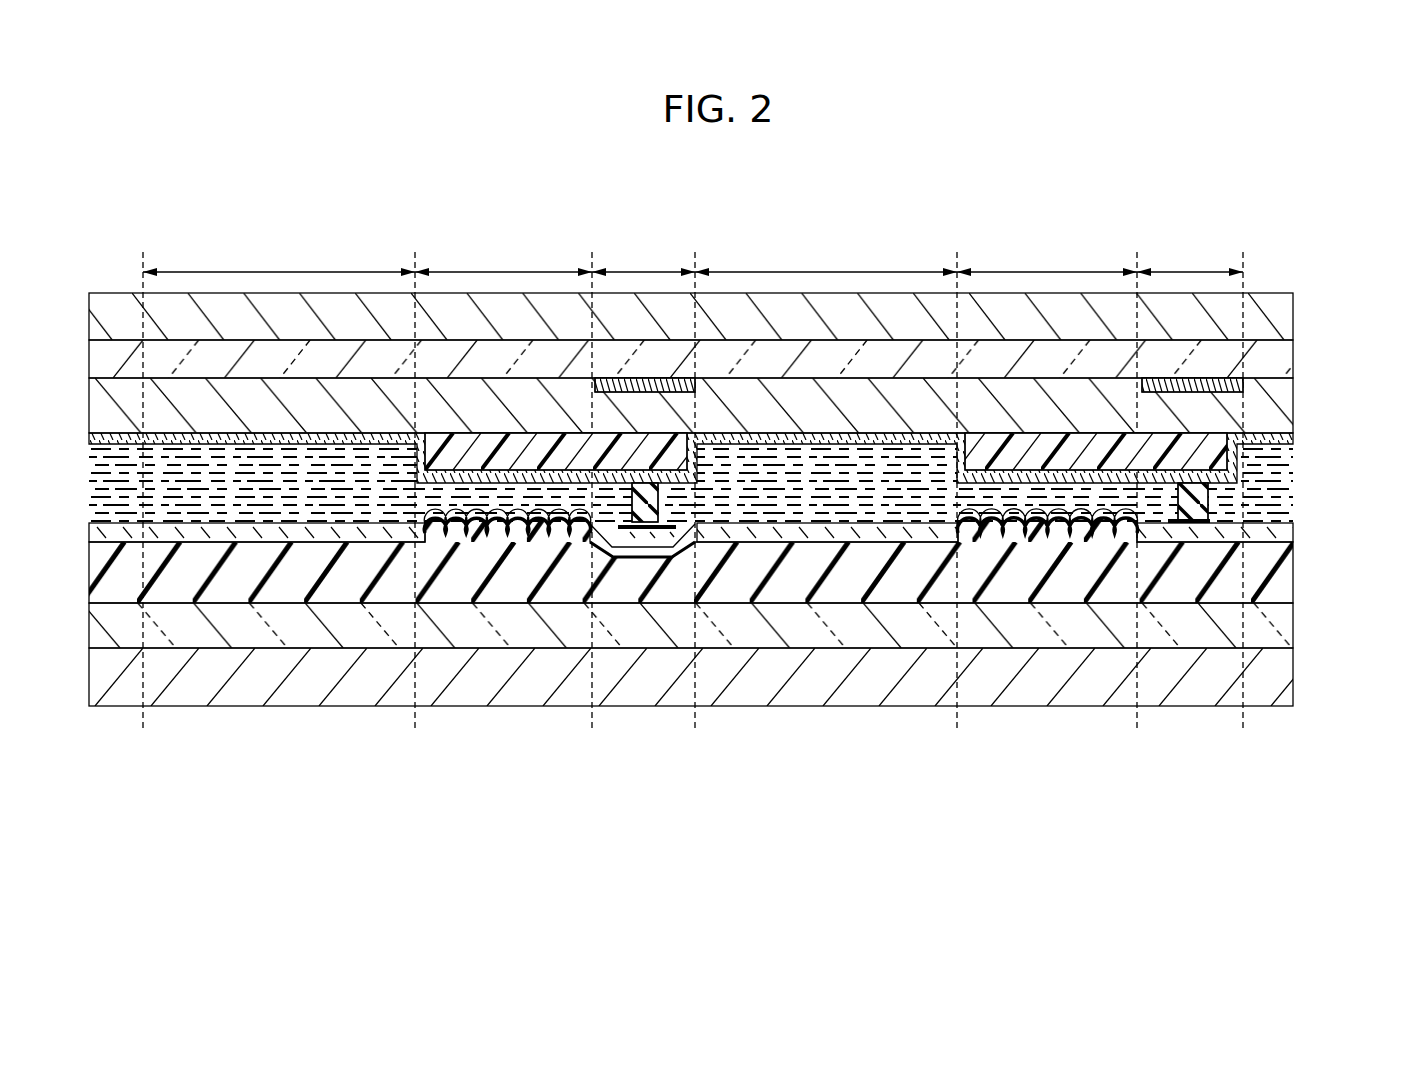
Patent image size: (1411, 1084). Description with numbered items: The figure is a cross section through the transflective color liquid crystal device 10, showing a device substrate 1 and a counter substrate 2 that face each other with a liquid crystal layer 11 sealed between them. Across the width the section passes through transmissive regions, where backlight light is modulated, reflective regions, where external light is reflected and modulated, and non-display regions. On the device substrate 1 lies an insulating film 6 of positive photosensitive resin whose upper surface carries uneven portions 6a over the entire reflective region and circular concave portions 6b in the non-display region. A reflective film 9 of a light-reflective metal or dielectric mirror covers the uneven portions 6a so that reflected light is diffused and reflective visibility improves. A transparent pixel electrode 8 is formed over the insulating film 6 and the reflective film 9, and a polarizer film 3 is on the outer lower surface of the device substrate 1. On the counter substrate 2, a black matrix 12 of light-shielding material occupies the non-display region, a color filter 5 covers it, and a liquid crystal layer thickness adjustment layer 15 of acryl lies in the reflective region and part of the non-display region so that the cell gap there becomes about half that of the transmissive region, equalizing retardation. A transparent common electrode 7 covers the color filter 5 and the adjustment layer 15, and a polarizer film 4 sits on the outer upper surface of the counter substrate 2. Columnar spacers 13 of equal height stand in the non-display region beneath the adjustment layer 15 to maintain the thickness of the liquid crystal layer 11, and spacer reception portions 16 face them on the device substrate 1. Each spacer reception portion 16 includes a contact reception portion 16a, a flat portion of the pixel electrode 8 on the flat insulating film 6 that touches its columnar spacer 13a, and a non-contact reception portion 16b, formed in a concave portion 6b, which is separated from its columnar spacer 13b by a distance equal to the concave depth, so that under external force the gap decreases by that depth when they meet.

The device substrate 1 is at (1290, 612).
The counter substrate 2 is at (1290, 356).
The polarizer film 3 is at (1290, 665).
The polarizer film 4 is at (1290, 306).
The color filter 5 is at (1290, 400).
The insulating film 6 is at (716, 630).
The uneven portions 6a is at (1050, 505).
The concave portions 6b is at (620, 552).
The common electrode 7 is at (1290, 439).
The pixel electrode 8 is at (1290, 532).
The reflective film 9 is at (427, 538).
The liquid crystal device 10 is at (1035, 178).
The liquid crystal layer 11 is at (1290, 456).
The black matrix 12 is at (682, 378).
The columnar spacers 13 is at (1000, 641).
The columnar spacer 13a is at (1212, 494).
The columnar spacer 13b is at (645, 524).
The liquid crystal layer thickness adjustment layer 15 is at (493, 462).
The spacer reception portions 16 is at (1014, 641).
The contact reception portion 16a is at (1213, 511).
The non-contact reception portion 16b is at (686, 534).